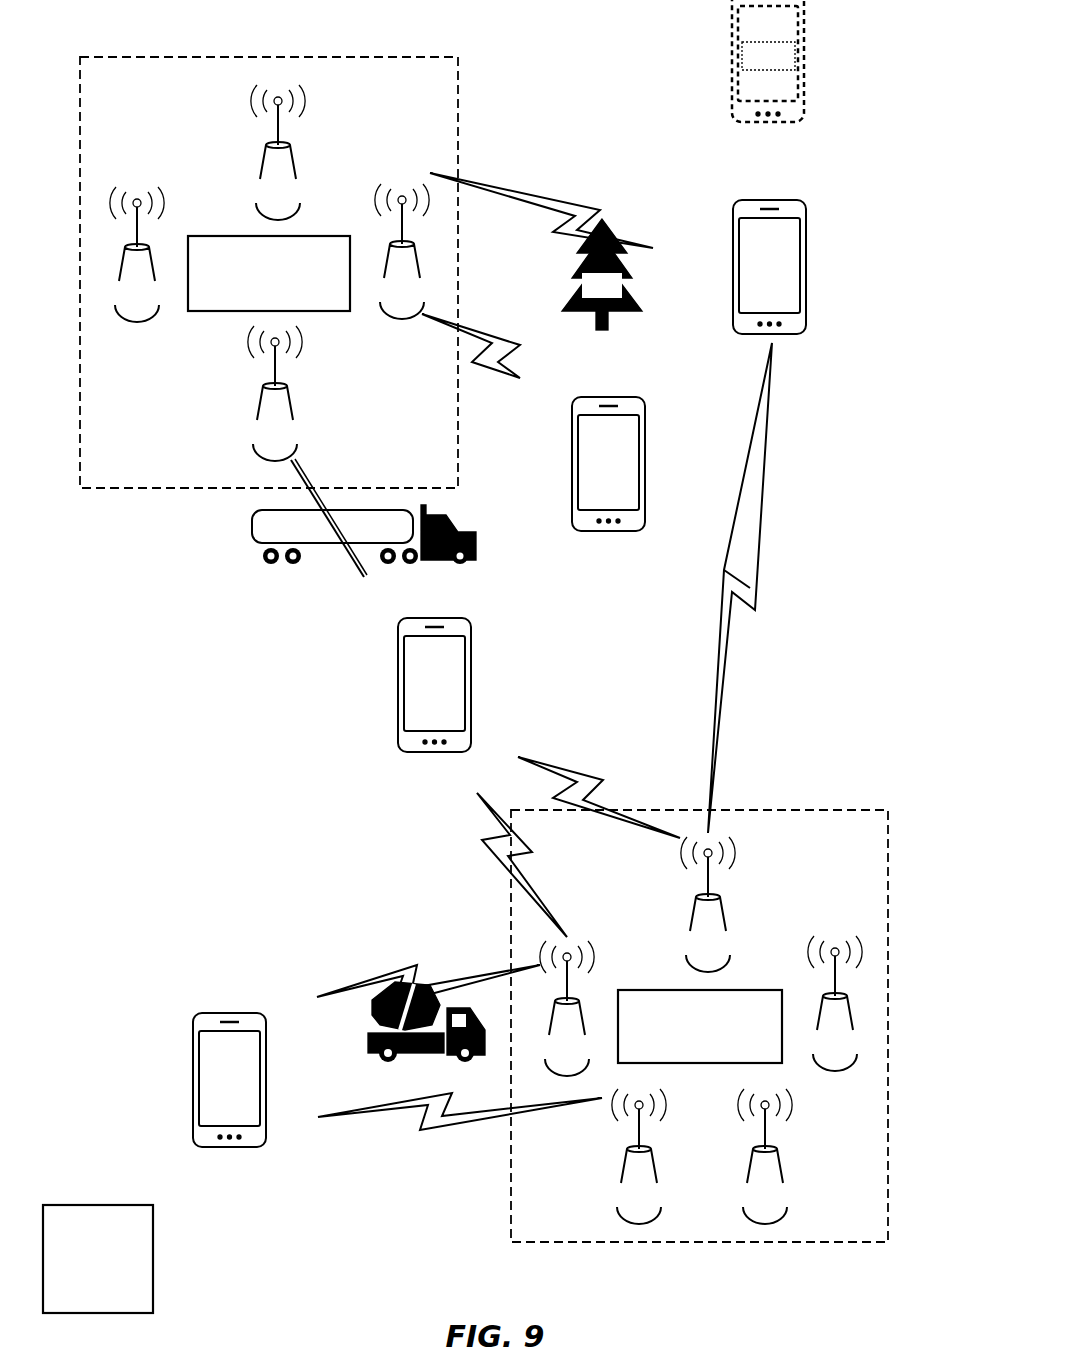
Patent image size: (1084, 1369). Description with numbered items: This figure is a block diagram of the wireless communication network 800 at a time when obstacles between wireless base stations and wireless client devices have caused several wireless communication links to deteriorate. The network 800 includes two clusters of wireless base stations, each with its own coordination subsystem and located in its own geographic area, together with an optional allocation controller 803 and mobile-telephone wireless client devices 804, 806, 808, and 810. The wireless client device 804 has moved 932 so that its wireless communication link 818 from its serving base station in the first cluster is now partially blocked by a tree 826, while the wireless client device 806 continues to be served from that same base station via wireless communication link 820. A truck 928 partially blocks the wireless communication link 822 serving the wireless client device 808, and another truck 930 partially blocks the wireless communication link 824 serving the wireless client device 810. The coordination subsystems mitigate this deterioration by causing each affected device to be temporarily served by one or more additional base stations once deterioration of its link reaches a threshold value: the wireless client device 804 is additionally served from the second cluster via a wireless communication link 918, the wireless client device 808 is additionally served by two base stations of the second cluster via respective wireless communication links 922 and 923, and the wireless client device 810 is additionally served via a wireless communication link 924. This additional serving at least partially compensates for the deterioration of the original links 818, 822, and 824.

The wireless communication network 800 is at (908, 51).
The allocation controller 803 is at (81, 1299).
The wireless client device 804 is at (769, 167).
The wireless client device 806 is at (590, 473).
The wireless client device 808 is at (434, 685).
The wireless client device 810 is at (212, 1090).
The wireless communication link 818 is at (720, 267).
The wireless communication link 820 is at (572, 393).
The wireless communication link 822 is at (393, 613).
The wireless communication link 824 is at (265, 1008).
The tree 826 is at (586, 297).
The wireless communication link 918 is at (747, 588).
The wireless communication link 922 is at (475, 738).
The wireless communication link 923 is at (448, 757).
The wireless communication link 924 is at (268, 1123).
The truck 928 is at (338, 537).
The truck 930 is at (368, 1042).
The movement of wireless client device 932 is at (762, 126).